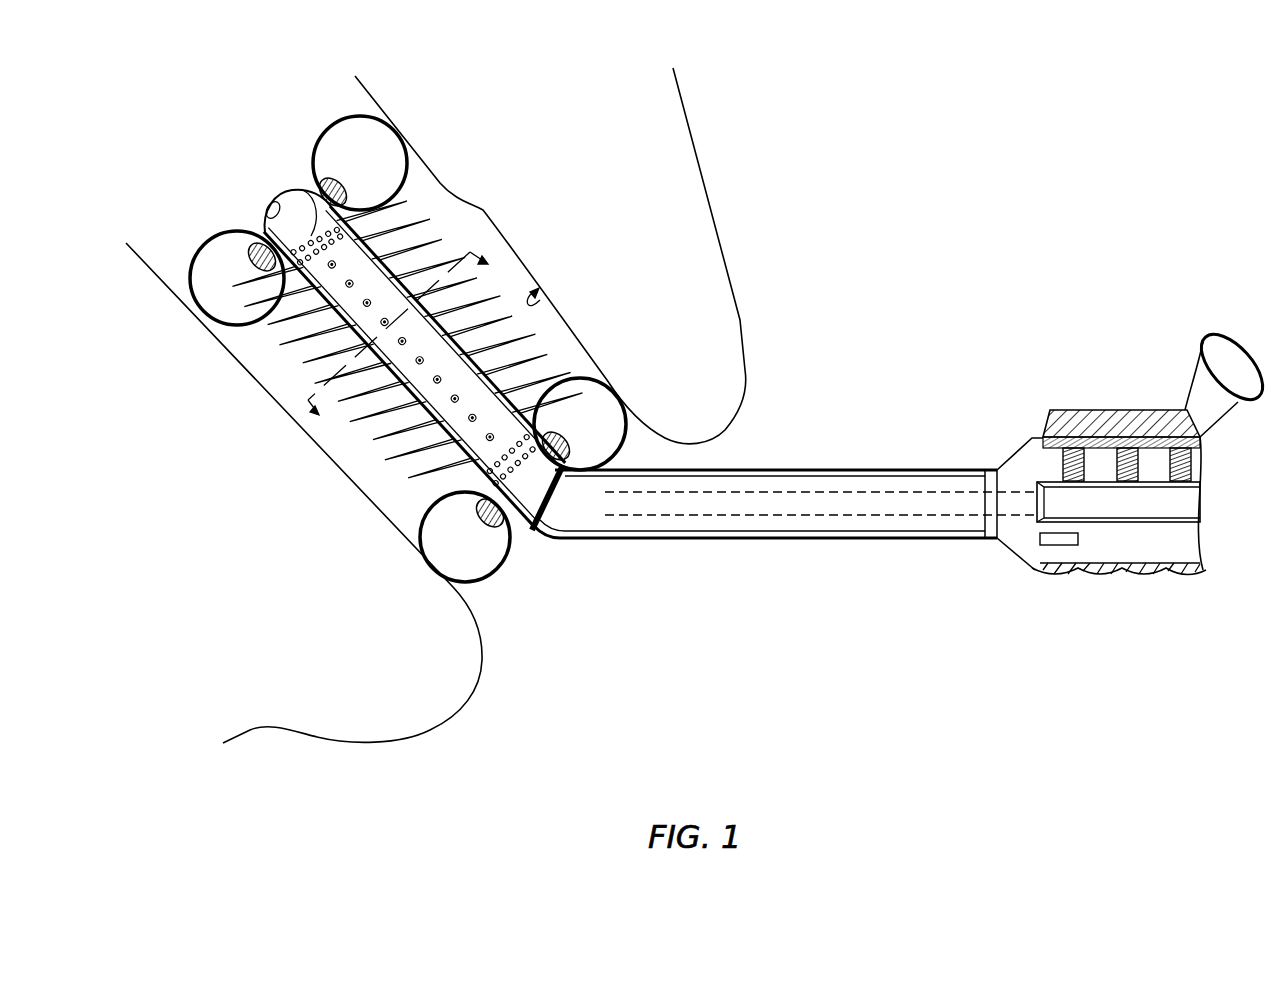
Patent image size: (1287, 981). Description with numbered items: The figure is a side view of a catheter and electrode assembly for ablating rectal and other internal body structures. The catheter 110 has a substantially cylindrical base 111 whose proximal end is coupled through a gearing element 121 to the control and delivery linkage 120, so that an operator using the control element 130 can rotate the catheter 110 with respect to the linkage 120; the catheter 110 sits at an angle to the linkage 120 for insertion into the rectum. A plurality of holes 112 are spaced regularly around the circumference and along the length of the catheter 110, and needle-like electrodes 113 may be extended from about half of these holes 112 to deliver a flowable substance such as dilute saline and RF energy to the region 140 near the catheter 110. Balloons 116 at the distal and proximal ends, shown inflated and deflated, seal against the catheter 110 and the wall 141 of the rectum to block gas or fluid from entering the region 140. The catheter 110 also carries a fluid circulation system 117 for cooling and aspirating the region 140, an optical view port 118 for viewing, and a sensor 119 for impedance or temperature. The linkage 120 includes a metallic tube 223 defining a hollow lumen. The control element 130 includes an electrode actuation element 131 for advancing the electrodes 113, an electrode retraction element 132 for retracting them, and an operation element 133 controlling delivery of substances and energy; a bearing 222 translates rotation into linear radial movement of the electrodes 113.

The catheter 110 is at (353, 440).
The base 111 is at (452, 422).
The holes 112 is at (260, 383).
The electrodes 113 is at (537, 358).
The balloon 116 is at (327, 140).
The fluid circulation system 117 is at (263, 233).
The optical view port 118 is at (270, 204).
The sensor 119 is at (313, 232).
The control and delivery linkage 120 is at (785, 516).
The gearing element 121 is at (532, 527).
The control element 130 is at (1118, 461).
The electrode actuation element 131 is at (1087, 410).
The electrode retraction element 132 is at (1180, 505).
The operation element 133 is at (1078, 537).
The region 140 is at (492, 243).
The wall 141 is at (540, 300).
The bearing 222 is at (870, 470).
The metallic tube 223 is at (827, 513).